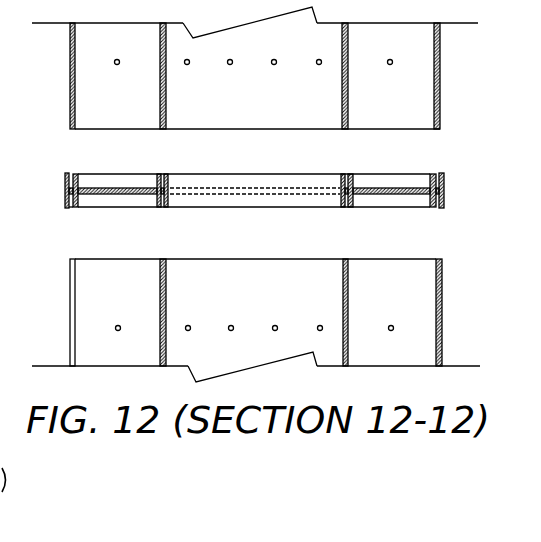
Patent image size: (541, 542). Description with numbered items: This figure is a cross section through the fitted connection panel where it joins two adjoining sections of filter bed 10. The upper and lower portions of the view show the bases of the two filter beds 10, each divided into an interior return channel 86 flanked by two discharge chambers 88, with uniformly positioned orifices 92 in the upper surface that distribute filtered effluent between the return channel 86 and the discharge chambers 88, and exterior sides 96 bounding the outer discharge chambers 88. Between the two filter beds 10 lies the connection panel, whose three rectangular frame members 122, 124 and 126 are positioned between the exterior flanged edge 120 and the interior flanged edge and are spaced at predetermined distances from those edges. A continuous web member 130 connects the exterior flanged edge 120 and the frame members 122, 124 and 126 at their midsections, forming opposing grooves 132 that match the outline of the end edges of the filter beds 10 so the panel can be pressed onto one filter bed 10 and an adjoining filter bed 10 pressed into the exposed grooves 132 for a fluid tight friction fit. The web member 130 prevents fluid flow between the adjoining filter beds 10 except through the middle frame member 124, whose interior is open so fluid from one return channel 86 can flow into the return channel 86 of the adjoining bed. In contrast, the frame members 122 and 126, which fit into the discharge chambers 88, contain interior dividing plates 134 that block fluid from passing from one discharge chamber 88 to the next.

The filter bed 10 is at (452, 43).
The interior return channel 86 is at (270, 107).
The discharge chamber 88 is at (113, 88).
The orifices 92 is at (166, 80).
The exterior side 96 is at (72, 82).
The exterior flanged edge 120 is at (66, 196).
The frame member 122 is at (77, 176).
The frame member 124 is at (168, 208).
The frame member 126 is at (436, 174).
The web member 130 is at (70, 173).
The grooves 132 is at (72, 212).
The interior dividing plate 134 is at (125, 189).